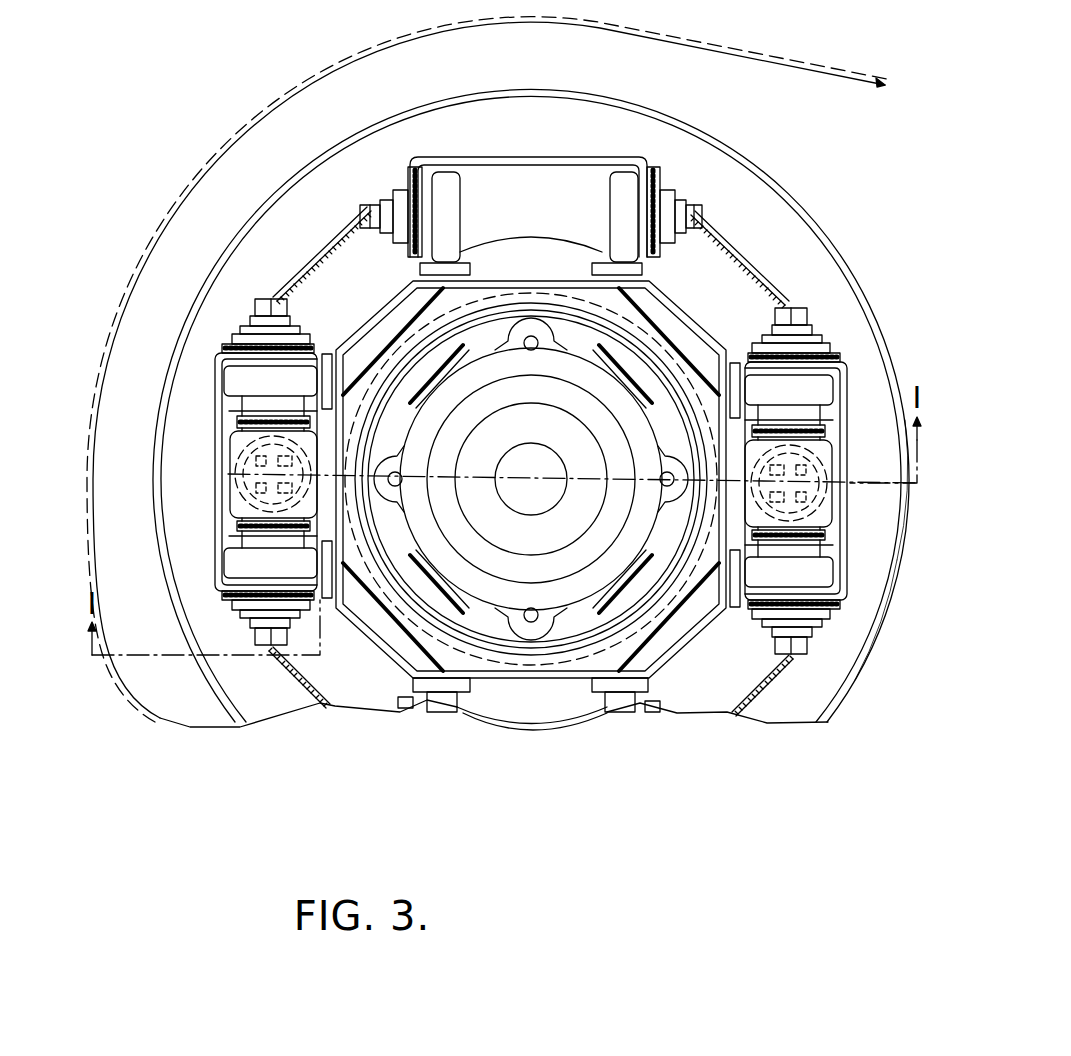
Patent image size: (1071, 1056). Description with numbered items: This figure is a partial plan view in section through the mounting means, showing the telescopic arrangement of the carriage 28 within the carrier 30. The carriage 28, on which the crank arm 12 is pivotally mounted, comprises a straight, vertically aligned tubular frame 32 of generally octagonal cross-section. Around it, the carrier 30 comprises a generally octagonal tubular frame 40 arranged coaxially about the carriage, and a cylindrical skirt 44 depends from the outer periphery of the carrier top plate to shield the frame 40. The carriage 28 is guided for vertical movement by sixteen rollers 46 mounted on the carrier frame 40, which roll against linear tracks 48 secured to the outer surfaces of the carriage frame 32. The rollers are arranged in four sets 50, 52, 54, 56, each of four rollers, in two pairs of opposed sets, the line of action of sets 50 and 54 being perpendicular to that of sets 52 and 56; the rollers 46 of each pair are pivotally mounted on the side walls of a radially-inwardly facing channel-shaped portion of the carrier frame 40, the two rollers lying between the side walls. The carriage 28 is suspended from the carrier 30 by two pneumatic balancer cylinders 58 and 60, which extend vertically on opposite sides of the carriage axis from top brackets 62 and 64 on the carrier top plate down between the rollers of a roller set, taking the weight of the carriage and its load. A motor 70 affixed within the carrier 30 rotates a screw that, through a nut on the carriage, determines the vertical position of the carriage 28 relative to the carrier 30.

The crank arm 12 is at (690, 45).
The carriage 28 is at (368, 307).
The carrier 30 is at (433, 147).
The tubular frame 32 is at (677, 304).
The tubular frame 40 is at (840, 485).
The cylindrical skirt 44 is at (886, 342).
The rollers 46 is at (616, 205).
The linear tracks 48 is at (600, 275).
The roller set 50 is at (486, 116).
The roller set 52 is at (207, 480).
The roller set 54 is at (553, 733).
The roller set 56 is at (874, 549).
The pneumatic balancer cylinder 58 is at (840, 598).
The pneumatic balancer cylinder 60 is at (243, 484).
The top bracket 62 is at (826, 429).
The top bracket 64 is at (245, 424).
The motor 70 is at (572, 372).